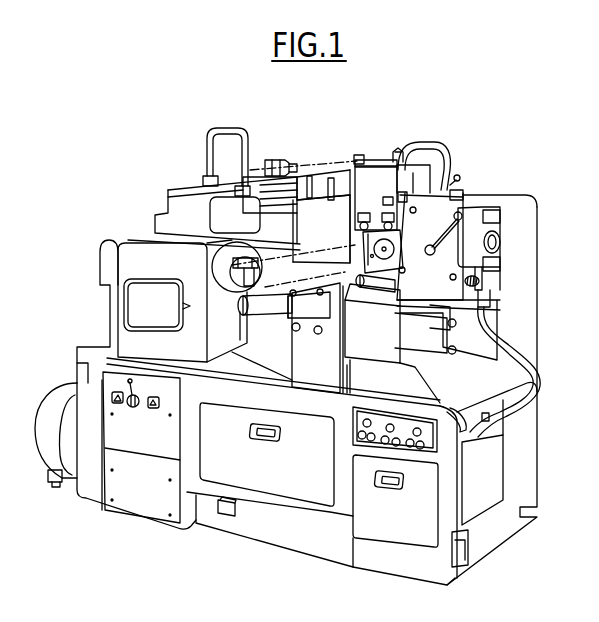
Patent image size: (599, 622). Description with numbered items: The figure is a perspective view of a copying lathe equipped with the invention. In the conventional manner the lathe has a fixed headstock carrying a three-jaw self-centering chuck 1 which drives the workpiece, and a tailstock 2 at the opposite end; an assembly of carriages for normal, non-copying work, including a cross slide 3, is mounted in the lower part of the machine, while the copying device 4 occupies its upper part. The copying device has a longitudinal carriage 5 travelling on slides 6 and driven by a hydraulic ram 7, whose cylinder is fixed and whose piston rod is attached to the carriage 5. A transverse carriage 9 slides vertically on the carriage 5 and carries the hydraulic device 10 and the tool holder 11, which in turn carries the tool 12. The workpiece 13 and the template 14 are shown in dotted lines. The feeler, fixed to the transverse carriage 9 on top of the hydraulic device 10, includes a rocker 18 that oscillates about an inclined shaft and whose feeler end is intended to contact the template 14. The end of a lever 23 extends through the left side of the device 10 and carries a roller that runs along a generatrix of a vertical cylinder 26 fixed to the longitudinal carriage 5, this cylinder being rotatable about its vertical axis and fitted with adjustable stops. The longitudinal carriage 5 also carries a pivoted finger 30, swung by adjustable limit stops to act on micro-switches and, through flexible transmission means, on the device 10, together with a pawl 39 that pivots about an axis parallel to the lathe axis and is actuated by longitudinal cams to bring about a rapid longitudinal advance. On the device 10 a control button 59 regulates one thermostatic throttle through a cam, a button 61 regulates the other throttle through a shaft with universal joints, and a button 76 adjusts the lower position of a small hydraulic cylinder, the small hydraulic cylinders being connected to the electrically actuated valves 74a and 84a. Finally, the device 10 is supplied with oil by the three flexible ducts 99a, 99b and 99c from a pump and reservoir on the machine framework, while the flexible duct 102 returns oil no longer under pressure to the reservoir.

The three-jaw self-centering chuck 1 is at (233, 280).
The tailstock 2 is at (395, 283).
The cross slide 3 is at (368, 338).
The copying device 4 is at (431, 139).
The longitudinal carriage 5 is at (317, 247).
The slides 6 is at (496, 217).
The hydraulic ram 7 is at (497, 242).
The transverse carriage 9 is at (366, 245).
The hydraulic device 10 is at (386, 188).
The tool holder 11 is at (387, 248).
The tool 12 is at (403, 272).
The workpiece 13 is at (276, 280).
The template 14 is at (298, 166).
The rocker 18 is at (393, 150).
The lever 23 is at (362, 165).
The vertical cylinder 26 is at (353, 160).
The finger 30 is at (329, 183).
The pawl 39 is at (308, 182).
The control button 59 is at (360, 227).
The button 61 is at (393, 226).
The button 76 is at (414, 211).
The electrically actuated valve 74a is at (502, 77).
The electrically actuated valve 84a is at (502, 95).
The duct 99a is at (502, 113).
The duct 99b is at (455, 149).
The duct 99c is at (501, 149).
The duct 102 is at (497, 166).